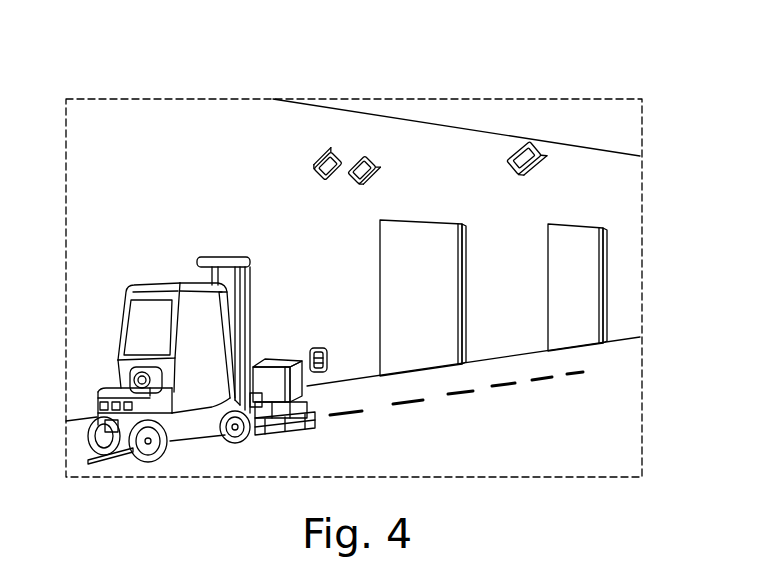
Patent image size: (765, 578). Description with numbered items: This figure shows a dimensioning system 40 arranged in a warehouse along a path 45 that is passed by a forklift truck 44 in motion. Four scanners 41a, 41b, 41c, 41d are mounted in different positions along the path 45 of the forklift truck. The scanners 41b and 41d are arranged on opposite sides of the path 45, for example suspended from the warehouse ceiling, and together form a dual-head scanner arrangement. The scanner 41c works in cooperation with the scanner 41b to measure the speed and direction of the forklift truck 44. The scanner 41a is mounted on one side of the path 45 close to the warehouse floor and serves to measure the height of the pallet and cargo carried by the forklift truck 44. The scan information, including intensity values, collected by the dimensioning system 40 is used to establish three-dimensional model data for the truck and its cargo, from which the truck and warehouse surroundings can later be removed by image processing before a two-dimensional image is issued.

The dimensioning system 40 is at (606, 109).
The scanner 41a is at (308, 356).
The scanner 41b is at (322, 153).
The scanner 41c is at (360, 155).
The scanner 41d is at (517, 148).
The forklift truck 44 is at (183, 383).
The path 45 is at (457, 395).